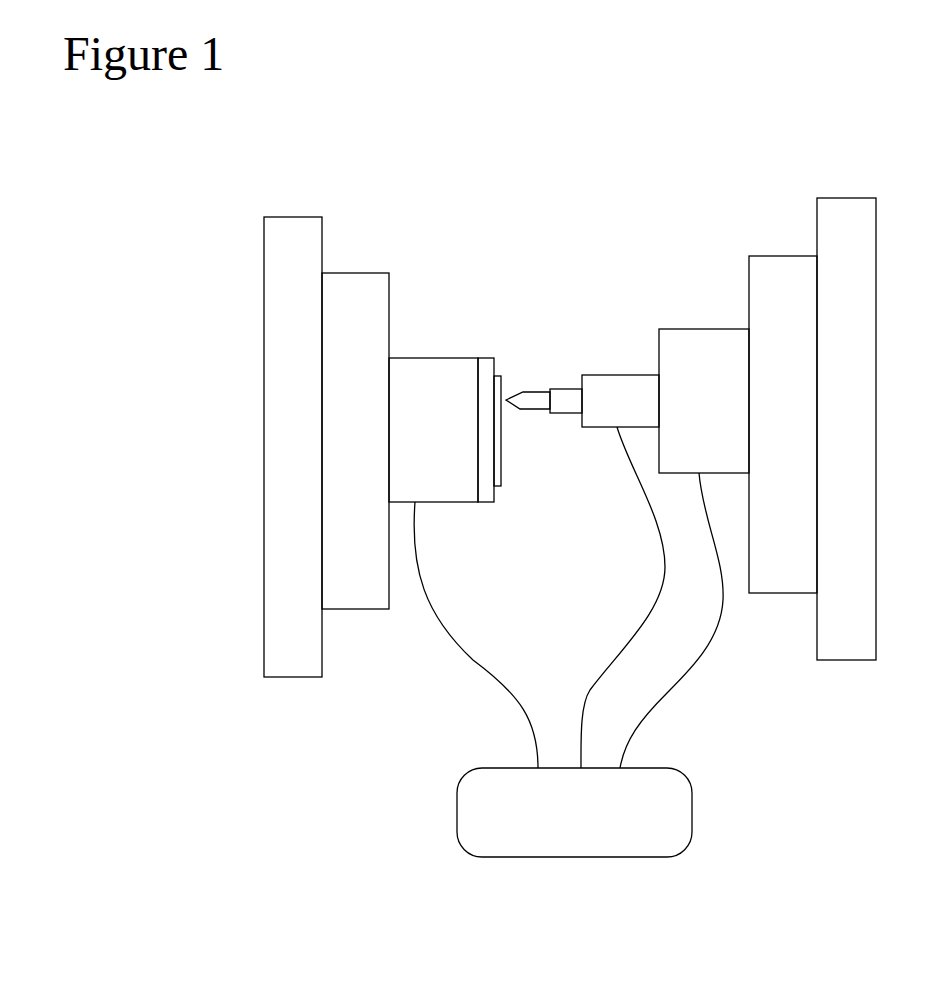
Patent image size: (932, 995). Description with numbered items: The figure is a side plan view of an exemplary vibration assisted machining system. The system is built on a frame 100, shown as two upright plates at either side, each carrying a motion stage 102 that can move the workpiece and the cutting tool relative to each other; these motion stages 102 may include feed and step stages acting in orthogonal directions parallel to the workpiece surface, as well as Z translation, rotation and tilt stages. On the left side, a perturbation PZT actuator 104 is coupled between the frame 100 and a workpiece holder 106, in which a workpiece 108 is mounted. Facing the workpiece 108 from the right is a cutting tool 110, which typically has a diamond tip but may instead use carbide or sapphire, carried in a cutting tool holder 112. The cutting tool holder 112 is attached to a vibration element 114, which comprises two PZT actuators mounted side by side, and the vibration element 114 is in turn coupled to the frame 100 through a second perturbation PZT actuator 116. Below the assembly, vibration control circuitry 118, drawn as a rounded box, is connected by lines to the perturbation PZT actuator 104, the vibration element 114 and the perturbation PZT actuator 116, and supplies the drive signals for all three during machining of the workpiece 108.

The frame 100 is at (264, 625).
The motion stages 102 is at (360, 273).
The perturbation PZT actuator 104 is at (435, 502).
The workpiece holder 106 is at (485, 358).
The workpiece 108 is at (500, 465).
The cutting tool 110 is at (526, 392).
The cutting tool holder 112 is at (567, 413).
The vibration element 114 is at (623, 375).
The perturbation PZT actuator 116 is at (688, 329).
The vibration control circuitry 118 is at (692, 836).